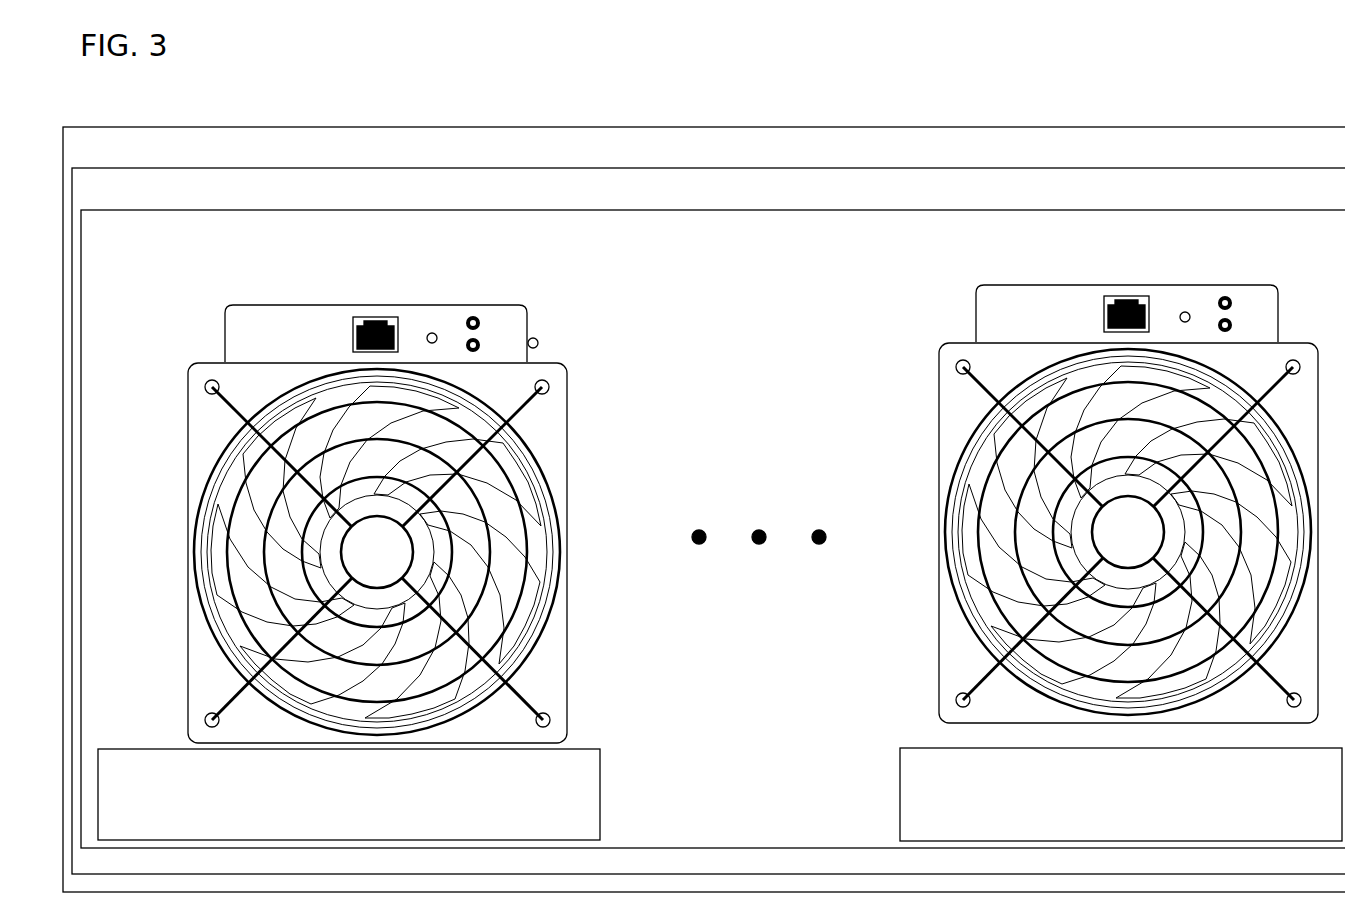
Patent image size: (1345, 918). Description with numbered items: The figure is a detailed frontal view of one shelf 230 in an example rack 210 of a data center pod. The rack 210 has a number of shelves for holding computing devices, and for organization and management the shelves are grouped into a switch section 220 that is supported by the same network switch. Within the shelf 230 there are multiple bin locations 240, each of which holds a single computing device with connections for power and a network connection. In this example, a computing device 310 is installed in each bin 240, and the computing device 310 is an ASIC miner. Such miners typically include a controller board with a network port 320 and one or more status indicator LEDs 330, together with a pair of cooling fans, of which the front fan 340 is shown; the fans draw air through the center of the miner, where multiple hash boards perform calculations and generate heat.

The rack 210 is at (775, 160).
The switch section 220 is at (792, 200).
The shelf 230 is at (775, 238).
The bin 240 is at (953, 824).
The computing device 310 is at (416, 511).
The network port 320 is at (408, 316).
The status indicator LED 330 is at (496, 317).
The front fan 340 is at (419, 552).